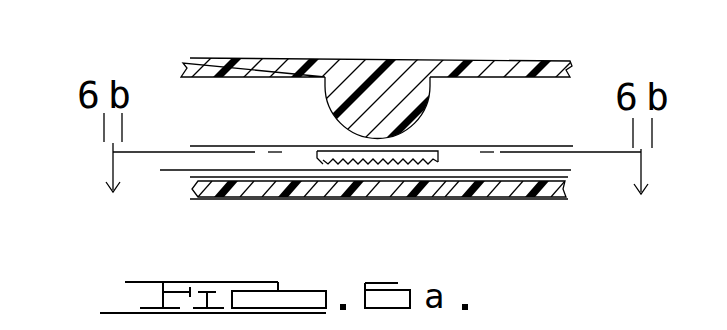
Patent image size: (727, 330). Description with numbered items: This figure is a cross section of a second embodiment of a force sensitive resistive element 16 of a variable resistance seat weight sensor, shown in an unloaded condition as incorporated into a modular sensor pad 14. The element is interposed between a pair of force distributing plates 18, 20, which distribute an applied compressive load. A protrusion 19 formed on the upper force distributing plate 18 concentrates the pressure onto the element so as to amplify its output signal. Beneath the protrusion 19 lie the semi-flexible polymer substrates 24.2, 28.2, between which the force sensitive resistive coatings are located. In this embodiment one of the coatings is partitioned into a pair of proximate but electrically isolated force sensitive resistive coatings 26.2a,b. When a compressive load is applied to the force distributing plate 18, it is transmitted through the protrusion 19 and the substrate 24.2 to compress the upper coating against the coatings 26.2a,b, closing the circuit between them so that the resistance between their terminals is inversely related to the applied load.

The modular sensor pad 14 is at (84, 144).
The force sensitive resistive element 16 is at (352, 204).
The force distributing plate 18 is at (184, 62).
The protrusion 19 is at (422, 122).
The force distributing plate 20 is at (558, 199).
The polymer substrate 24.2 is at (243, 145).
The force sensitive resistive coatings 26.2a,b is at (320, 176).
The polymer substrate 28.2 is at (438, 176).